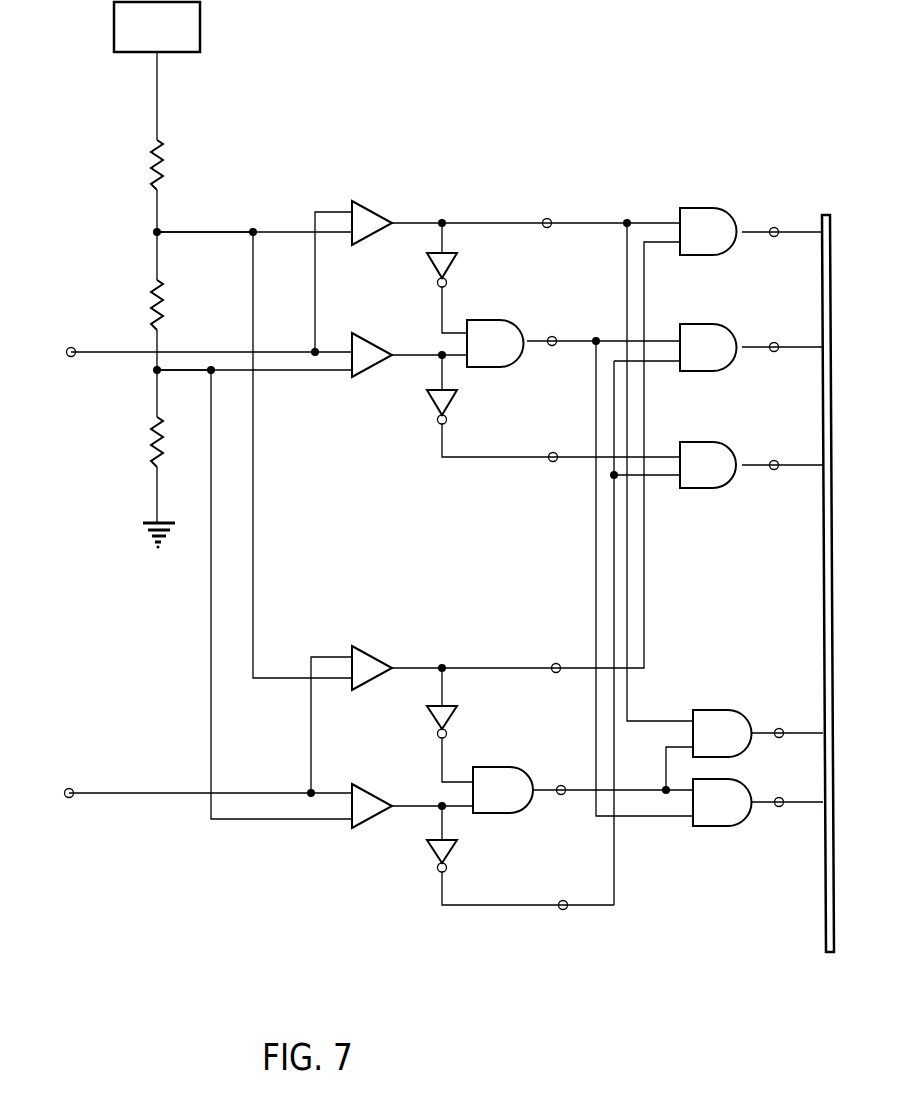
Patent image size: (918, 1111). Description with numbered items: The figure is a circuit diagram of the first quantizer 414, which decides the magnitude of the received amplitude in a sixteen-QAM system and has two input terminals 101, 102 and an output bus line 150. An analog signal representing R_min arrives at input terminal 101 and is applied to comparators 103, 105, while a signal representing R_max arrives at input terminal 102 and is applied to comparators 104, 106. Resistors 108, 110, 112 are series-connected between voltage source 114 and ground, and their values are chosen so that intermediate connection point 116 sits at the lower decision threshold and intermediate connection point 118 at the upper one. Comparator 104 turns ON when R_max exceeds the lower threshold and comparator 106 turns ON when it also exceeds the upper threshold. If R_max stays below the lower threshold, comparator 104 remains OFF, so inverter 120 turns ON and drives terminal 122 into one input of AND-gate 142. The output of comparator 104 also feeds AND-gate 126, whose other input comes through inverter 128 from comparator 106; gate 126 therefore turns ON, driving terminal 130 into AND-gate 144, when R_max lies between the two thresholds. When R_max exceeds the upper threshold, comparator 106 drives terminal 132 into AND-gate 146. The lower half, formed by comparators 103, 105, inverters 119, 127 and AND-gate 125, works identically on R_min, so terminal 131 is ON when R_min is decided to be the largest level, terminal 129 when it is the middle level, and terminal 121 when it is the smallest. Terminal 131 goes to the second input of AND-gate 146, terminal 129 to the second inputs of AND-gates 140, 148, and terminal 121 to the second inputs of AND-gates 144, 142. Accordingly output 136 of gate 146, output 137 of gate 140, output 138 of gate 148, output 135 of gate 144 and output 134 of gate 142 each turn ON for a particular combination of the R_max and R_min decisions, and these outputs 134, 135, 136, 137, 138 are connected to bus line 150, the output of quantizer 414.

The input terminal 101 is at (69, 788).
The input terminal 102 is at (75, 337).
The comparator 103 is at (366, 812).
The comparator 104 is at (366, 362).
The comparator 105 is at (366, 662).
The comparator 106 is at (366, 216).
The resistor 108 is at (165, 165).
The resistor 110 is at (152, 303).
The resistor 112 is at (152, 442).
The voltage source 114 is at (200, 35).
The intermediate connection point 116 is at (152, 372).
The intermediate connection point 118 is at (152, 232).
The inverter 119 is at (447, 850).
The inverter 120 is at (447, 402).
The terminal 121 is at (563, 900).
The terminal 122 is at (553, 452).
The AND-gate 125 is at (510, 777).
The AND-gate 126 is at (500, 330).
The inverter 127 is at (437, 716).
The inverter 128 is at (437, 262).
The terminal 129 is at (561, 785).
The terminal 130 is at (552, 336).
The terminal 131 is at (556, 663).
The terminal 132 is at (547, 218).
The output 134 is at (774, 470).
The output 135 is at (774, 352).
The output 136 is at (774, 237).
The output 137 is at (779, 728).
The output 138 is at (779, 807).
The AND-gate 140 is at (730, 720).
The AND-gate 142 is at (700, 482).
The AND-gate 144 is at (700, 366).
The AND-gate 146 is at (697, 250).
The AND-gate 148 is at (715, 814).
The bus line 150 is at (826, 900).
The first quantizer 414 is at (238, 884).